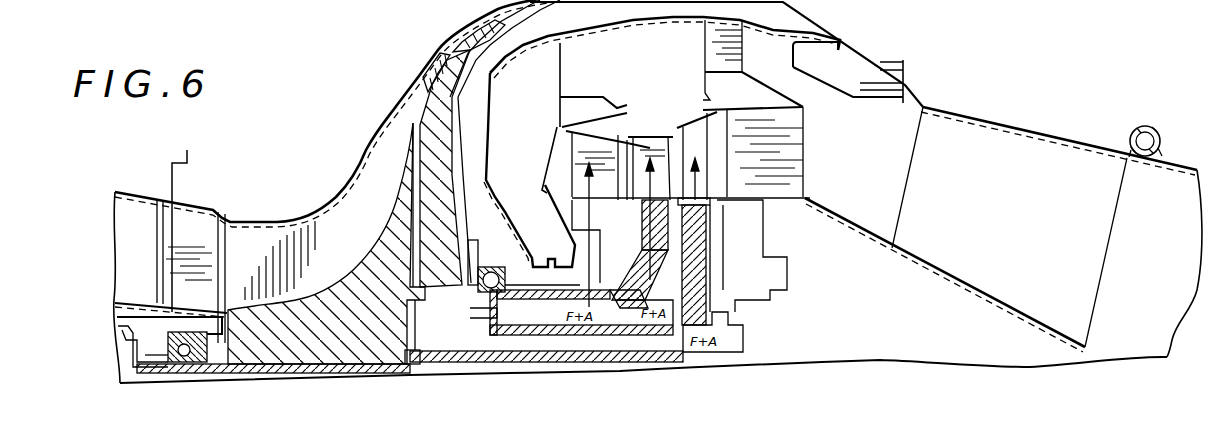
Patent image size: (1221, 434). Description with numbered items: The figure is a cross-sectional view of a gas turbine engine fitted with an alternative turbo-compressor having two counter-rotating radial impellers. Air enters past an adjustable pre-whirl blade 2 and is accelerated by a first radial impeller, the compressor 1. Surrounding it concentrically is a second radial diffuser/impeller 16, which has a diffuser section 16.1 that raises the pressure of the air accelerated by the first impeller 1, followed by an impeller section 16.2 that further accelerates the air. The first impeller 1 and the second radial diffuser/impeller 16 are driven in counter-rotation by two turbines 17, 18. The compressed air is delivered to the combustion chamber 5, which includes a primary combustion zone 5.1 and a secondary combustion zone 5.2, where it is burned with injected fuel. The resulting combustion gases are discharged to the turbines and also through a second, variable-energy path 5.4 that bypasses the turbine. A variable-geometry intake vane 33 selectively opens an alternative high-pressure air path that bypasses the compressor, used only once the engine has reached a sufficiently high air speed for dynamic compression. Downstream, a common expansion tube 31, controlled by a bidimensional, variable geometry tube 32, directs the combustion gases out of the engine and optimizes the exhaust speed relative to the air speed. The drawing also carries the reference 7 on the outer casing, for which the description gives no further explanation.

The compressor 1 is at (273, 240).
The adjustable pre-whirl blade 2 is at (168, 240).
The combustion chamber 5 is at (523, 97).
The primary combustion zone 5.1 is at (540, 244).
The secondary combustion zone 5.2 is at (647, 70).
The second, variable-energy path 5.4 is at (802, 88).
The outer skin 7 is at (838, 36).
The second radial diffuser/impeller 16 is at (437, 127).
The diffuser section 16.1 is at (430, 84).
The impeller section 16.2 is at (456, 46).
The turbine 17 is at (645, 147).
The turbine 18 is at (698, 143).
The common expansion tube 31 is at (960, 150).
The bidimensional, variable geometry tube 32 is at (1165, 158).
The variable-geometry intake vane 33 is at (573, 167).